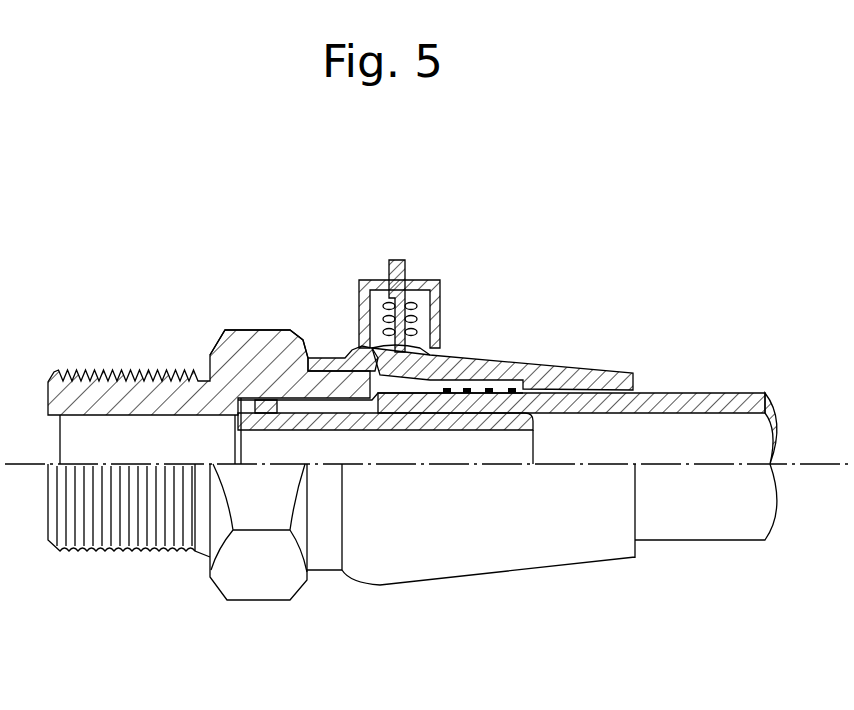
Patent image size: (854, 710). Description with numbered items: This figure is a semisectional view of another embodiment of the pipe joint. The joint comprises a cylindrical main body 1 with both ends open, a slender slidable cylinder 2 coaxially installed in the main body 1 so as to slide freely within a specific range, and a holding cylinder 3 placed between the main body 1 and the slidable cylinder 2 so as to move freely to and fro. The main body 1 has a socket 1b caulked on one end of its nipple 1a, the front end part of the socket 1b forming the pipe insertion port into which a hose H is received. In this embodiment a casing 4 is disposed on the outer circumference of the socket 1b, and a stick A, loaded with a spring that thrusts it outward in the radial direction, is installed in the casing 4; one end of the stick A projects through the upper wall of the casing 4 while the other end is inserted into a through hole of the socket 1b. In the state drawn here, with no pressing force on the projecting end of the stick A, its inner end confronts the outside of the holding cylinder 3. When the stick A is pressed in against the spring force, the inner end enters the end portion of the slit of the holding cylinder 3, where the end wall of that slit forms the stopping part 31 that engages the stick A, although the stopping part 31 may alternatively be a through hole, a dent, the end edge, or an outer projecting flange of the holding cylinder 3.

The main body 1 is at (330, 252).
The nipple 1a is at (248, 342).
The socket 1b is at (355, 352).
The slidable cylinder 2 is at (537, 449).
The holding cylinder 3 is at (462, 354).
The stopping part 31 is at (428, 352).
The casing 4 is at (438, 292).
The stick A is at (392, 282).
The hose H is at (698, 403).